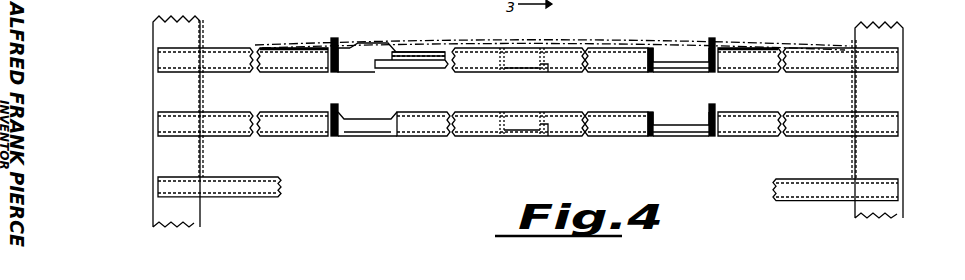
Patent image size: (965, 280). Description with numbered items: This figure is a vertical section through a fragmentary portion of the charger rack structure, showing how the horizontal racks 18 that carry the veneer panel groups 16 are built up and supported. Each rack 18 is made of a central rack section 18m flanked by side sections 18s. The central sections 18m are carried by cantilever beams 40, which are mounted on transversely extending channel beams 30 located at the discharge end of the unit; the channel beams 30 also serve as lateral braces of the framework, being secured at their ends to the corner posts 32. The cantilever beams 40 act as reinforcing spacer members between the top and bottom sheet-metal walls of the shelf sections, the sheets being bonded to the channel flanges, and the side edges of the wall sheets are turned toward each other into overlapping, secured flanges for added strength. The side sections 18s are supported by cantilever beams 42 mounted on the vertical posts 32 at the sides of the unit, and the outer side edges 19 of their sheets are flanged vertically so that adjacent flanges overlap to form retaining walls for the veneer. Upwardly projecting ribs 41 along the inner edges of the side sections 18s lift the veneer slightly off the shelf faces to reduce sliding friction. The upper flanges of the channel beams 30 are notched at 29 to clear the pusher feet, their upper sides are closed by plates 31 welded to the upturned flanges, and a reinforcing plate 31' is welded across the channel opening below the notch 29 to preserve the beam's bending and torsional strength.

The veneer panel groups 16 is at (648, 40).
The racks 18 is at (501, 151).
The side sections 18s is at (274, 50).
The central rack section 18m is at (527, 48).
The outer side edges 19 is at (204, 33).
The notch 29 is at (370, 100).
The channel beams 30 is at (366, 58).
The plates 31 is at (373, 33).
The reinforcing plate 31' is at (421, 28).
The corner posts 32 is at (156, 33).
The cantilever beams 40 is at (546, 125).
The ribs 41 is at (335, 38).
The cantilever beams 42 is at (168, 122).